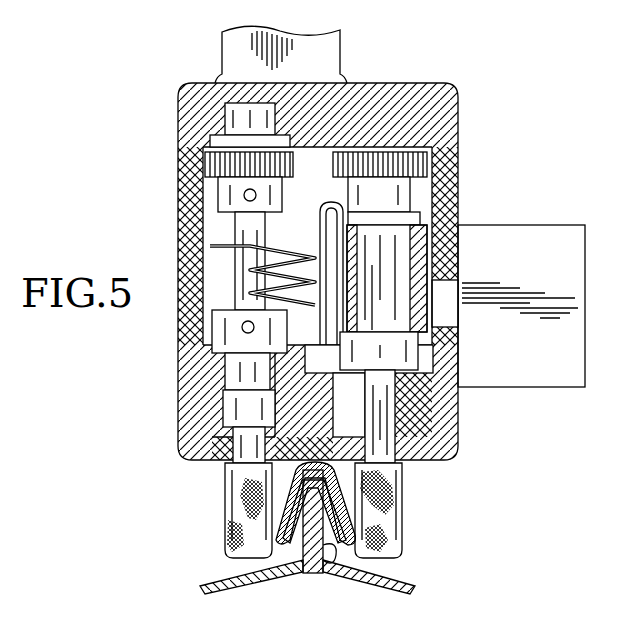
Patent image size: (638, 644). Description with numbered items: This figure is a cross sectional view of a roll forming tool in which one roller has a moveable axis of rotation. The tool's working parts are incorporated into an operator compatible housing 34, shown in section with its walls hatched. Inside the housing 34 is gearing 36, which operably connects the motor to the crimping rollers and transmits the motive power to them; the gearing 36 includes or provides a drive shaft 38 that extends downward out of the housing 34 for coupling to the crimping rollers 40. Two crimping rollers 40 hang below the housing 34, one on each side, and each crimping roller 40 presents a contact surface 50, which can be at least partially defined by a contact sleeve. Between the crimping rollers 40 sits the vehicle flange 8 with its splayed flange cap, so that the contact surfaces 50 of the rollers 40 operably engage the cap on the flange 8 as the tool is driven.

The housing 34 is at (450, 83).
The gearing 36 is at (425, 165).
The drive shaft 38 is at (385, 425).
The crimping roller 40 is at (402, 500).
The contact surface 50 is at (415, 535).
The vehicle flange 8 is at (325, 555).